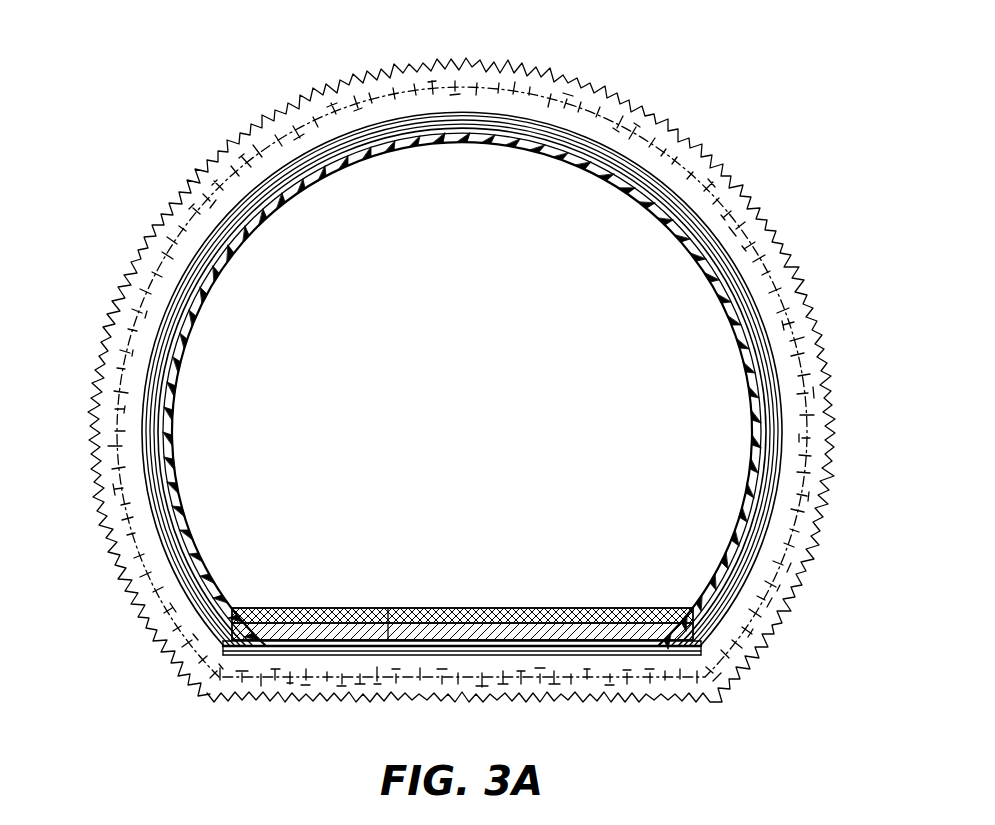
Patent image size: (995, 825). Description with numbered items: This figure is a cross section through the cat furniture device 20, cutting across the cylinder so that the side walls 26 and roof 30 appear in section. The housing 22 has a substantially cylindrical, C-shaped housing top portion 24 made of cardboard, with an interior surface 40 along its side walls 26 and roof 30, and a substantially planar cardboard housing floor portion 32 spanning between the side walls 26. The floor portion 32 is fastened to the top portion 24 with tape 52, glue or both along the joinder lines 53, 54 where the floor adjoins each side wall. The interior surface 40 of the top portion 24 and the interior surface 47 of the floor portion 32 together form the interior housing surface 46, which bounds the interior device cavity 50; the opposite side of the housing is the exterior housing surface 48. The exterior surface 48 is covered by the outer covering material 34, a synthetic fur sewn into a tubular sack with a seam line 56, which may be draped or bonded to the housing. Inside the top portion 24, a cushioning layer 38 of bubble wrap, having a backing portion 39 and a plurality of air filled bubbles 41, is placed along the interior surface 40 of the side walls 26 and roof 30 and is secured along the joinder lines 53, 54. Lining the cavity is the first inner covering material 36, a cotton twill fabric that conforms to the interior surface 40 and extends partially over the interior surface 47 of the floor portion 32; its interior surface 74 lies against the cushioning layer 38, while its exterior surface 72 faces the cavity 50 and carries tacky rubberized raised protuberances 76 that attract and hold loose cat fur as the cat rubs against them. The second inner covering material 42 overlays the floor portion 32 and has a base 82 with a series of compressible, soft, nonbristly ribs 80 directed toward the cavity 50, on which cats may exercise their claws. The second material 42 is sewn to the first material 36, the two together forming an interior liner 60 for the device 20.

The cat furniture device 20 is at (768, 158).
The housing 22 is at (469, 380).
The housing top portion 24 is at (607, 148).
The housing side walls 26 is at (780, 470).
The housing roof 30 is at (500, 113).
The housing floor portion 32 is at (410, 657).
The outer covering material 34 is at (127, 293).
The first inner covering material 36 is at (172, 495).
The cushioning layer 38 is at (165, 353).
The backing portion 39 is at (175, 380).
The interior surface of housing top portion 40 is at (650, 203).
The air filled bubbles 41 is at (197, 312).
The second inner covering material 42 is at (288, 608).
The interior housing surface 46 is at (737, 550).
The interior surface of housing floor portion 47 is at (388, 608).
The exterior housing surface 48 is at (648, 168).
The interior device cavity 50 is at (462, 418).
The tape 52 is at (713, 620).
The joinder line 53 is at (707, 673).
The joinder line 54 is at (217, 642).
The seam line 56 is at (457, 655).
The interior liner 60 is at (750, 497).
The exterior surface of first material 72 is at (715, 290).
The interior surface of first material 74 is at (728, 220).
The rubberized raised protuberances 76 is at (748, 397).
The ribs 80 is at (448, 608).
The base 82 is at (462, 589).